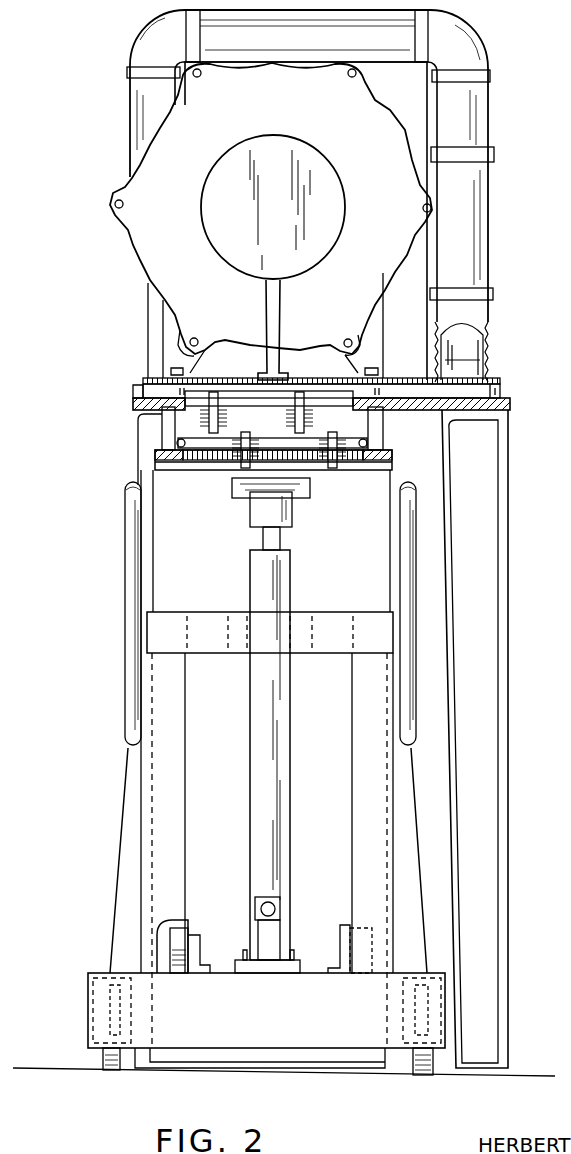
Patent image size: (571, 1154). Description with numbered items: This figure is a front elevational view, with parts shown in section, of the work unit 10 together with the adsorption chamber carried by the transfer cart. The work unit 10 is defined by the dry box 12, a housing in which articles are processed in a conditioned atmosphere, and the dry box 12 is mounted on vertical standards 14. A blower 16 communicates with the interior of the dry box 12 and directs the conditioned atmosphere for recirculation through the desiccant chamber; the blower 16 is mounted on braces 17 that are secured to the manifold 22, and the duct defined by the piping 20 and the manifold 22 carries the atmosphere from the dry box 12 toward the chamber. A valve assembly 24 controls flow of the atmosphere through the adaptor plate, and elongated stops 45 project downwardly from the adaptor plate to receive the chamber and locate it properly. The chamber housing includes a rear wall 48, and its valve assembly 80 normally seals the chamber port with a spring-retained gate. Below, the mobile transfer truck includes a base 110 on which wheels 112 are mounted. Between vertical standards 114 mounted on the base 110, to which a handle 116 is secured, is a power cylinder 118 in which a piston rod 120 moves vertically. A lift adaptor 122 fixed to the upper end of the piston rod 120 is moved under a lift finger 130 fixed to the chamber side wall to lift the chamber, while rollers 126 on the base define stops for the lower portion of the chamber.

The work unit 10 is at (497, 104).
The dry box 12 is at (413, 143).
The vertical standards 14 is at (135, 410).
The blower 16 is at (145, 250).
The braces 17 is at (172, 346).
The piping 20 is at (130, 115).
The manifold 22 is at (490, 395).
The valve assembly 24 is at (236, 396).
The stops 45 is at (170, 426).
The rear wall 48 is at (373, 497).
The valve assembly 80 is at (212, 466).
The base 110 is at (200, 1040).
The wheels 112 is at (105, 1055).
The vertical standards 114 is at (385, 826).
The handle 116 is at (127, 593).
The power cylinder 118 is at (283, 755).
The piston rod 120 is at (282, 540).
The lift adaptor 122 is at (256, 516).
The rollers 126 is at (190, 928).
The lift finger 130 is at (305, 485).